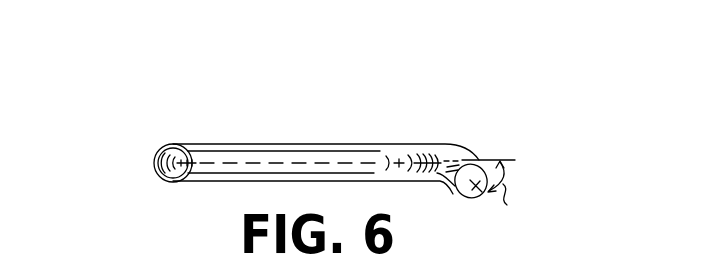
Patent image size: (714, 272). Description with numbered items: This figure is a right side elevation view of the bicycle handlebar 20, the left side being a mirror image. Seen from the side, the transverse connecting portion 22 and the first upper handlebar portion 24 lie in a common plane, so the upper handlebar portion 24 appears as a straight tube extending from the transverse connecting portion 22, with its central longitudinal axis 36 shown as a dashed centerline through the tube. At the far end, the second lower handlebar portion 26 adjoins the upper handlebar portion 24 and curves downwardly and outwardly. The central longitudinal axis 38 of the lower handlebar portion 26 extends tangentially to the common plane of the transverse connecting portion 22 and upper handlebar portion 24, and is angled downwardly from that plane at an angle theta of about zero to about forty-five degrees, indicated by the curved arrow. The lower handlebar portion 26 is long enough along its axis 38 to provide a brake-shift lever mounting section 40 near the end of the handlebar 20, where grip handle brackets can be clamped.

The handlebar 20 is at (339, 97).
The transverse connecting portion 22 is at (151, 153).
The first upper handlebar portion 24 is at (268, 143).
The second lower handlebar portion 26 is at (427, 134).
The central longitudinal axis 36 is at (312, 158).
The central longitudinal axis 38 is at (442, 178).
The brake-shift lever mounting section 40 is at (455, 195).